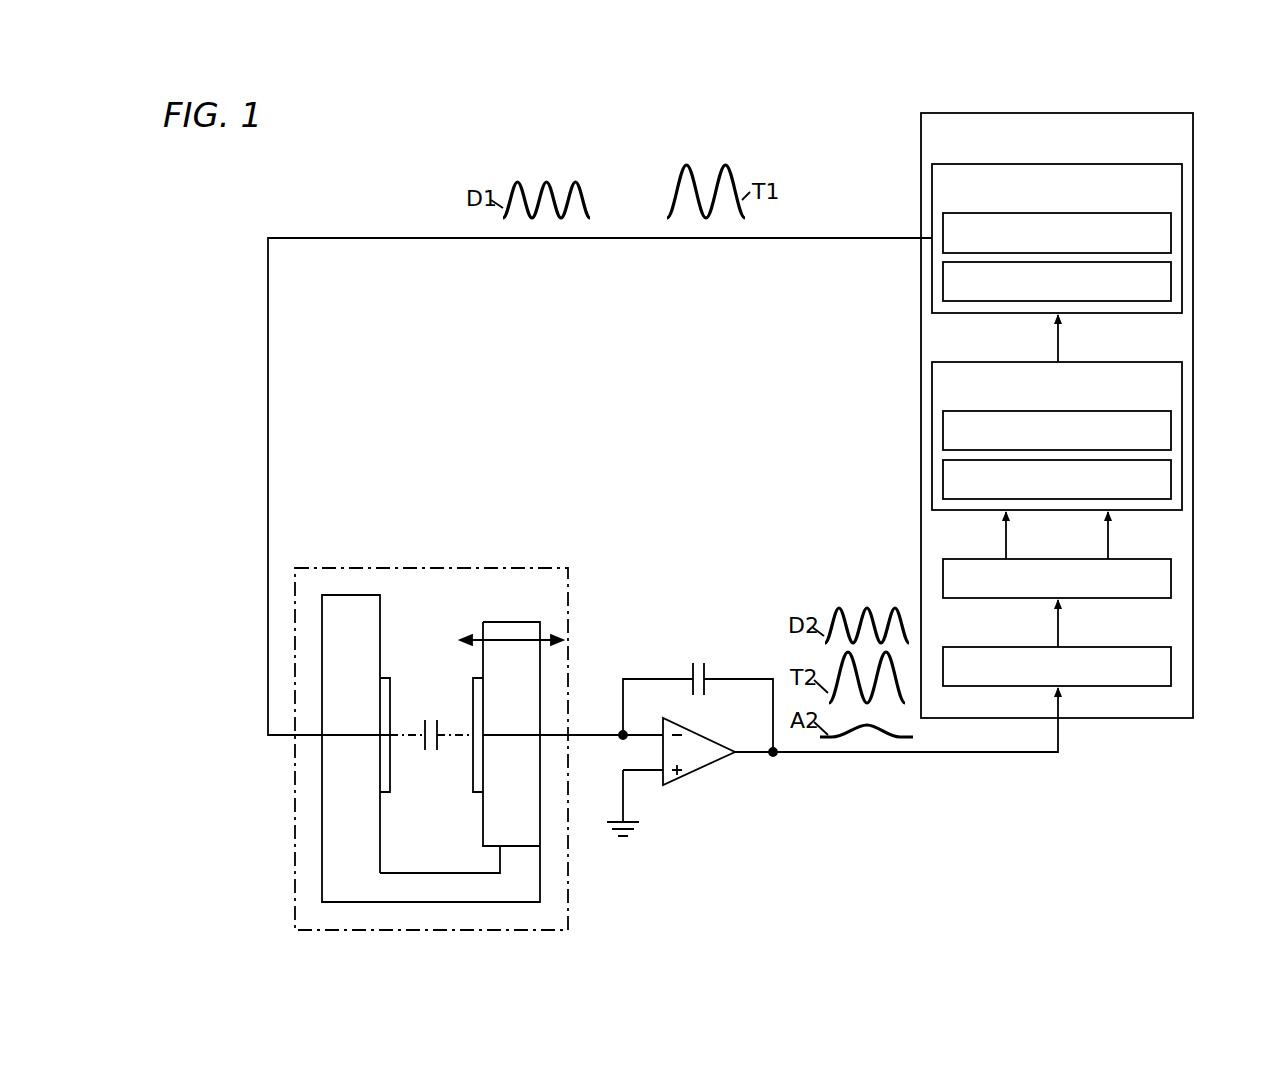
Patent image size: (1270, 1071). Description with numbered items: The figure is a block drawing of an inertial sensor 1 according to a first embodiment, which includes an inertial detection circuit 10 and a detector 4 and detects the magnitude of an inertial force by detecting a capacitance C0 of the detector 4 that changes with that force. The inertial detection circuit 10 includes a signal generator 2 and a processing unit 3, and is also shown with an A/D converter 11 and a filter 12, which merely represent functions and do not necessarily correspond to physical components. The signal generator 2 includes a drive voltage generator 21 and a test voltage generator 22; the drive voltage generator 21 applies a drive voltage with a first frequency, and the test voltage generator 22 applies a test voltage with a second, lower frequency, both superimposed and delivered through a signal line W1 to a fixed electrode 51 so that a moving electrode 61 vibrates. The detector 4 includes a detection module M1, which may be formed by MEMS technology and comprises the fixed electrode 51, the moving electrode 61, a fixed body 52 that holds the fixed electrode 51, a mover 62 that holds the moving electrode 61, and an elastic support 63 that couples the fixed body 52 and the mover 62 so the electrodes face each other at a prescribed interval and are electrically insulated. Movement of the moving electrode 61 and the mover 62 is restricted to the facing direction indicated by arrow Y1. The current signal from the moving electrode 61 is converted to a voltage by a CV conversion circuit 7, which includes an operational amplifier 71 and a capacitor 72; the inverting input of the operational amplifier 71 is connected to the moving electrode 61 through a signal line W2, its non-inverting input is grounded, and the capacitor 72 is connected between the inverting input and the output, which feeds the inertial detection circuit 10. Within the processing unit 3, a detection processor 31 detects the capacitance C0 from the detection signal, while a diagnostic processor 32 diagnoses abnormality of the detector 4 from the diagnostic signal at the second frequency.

The inertial sensor 1 is at (1083, 393).
The inertial detection circuit 10 is at (1155, 113).
The signal generator 2 is at (1182, 172).
The drive voltage generator 21 is at (1171, 232).
The test voltage generator 22 is at (1171, 283).
The processing unit 3 is at (1175, 378).
The detection processor 31 is at (1165, 432).
The diagnostic processor 32 is at (1165, 482).
The filter 12 is at (1166, 580).
The A/D converter 11 is at (1166, 668).
The detector 4 is at (475, 729).
The CV conversion circuit 7 is at (832, 690).
The operational amplifier 71 is at (710, 741).
The capacitor 72 is at (693, 660).
The fixed electrode 51 is at (390, 685).
The fixed body 52 is at (380, 616).
The moving electrode 61 is at (473, 688).
The mover 62 is at (492, 817).
The support 63 is at (483, 905).
The detection module M1 is at (569, 589).
The capacitance C0 is at (431, 752).
The arrow Y1 is at (524, 638).
The signal line W1 is at (318, 237).
The signal line W2 is at (596, 740).